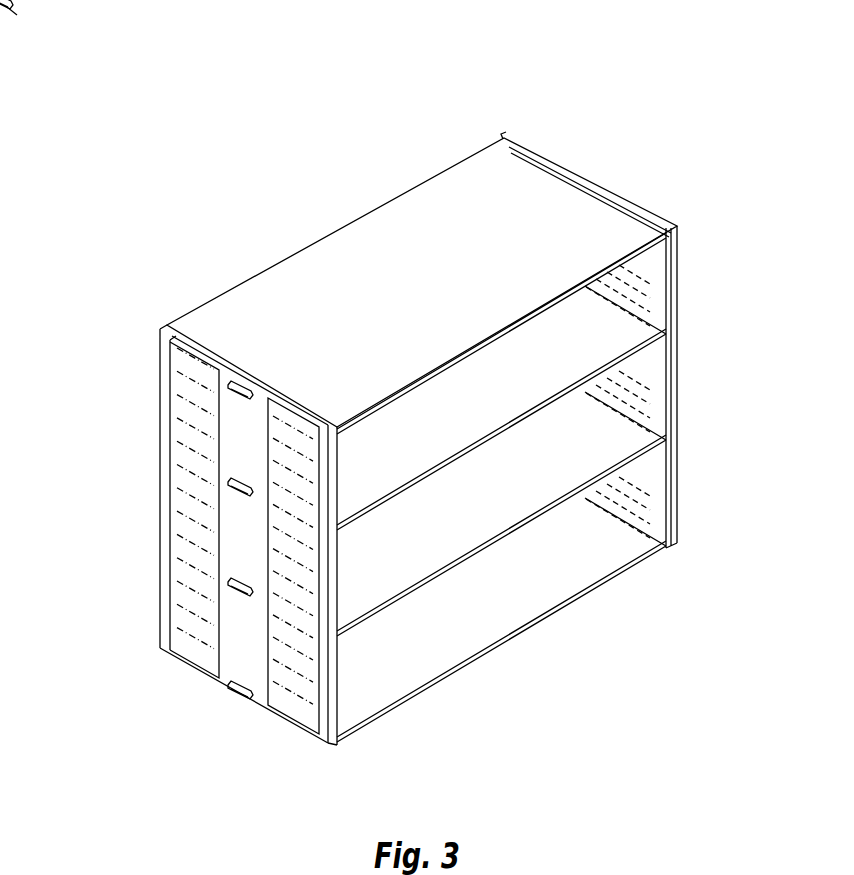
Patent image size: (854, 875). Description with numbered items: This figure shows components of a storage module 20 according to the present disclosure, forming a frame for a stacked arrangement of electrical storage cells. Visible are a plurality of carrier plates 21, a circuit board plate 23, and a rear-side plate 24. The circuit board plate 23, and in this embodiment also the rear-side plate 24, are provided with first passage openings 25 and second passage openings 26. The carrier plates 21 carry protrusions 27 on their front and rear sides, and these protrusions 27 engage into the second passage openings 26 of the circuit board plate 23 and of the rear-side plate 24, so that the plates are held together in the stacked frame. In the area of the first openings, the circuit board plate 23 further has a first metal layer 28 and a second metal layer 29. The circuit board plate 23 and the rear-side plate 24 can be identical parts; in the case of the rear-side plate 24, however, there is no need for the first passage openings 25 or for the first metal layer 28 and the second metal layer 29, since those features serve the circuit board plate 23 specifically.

The storage module 20 is at (558, 116).
The carrier plates 21 is at (388, 300).
The circuit board plate 23 is at (195, 342).
The rear-side plate 24 is at (534, 142).
The first passage openings 25 is at (226, 472).
The second passage openings 26 is at (238, 478).
The protrusions 27 is at (240, 492).
The first metal layer 28 is at (177, 587).
The second metal layer 29 is at (308, 670).